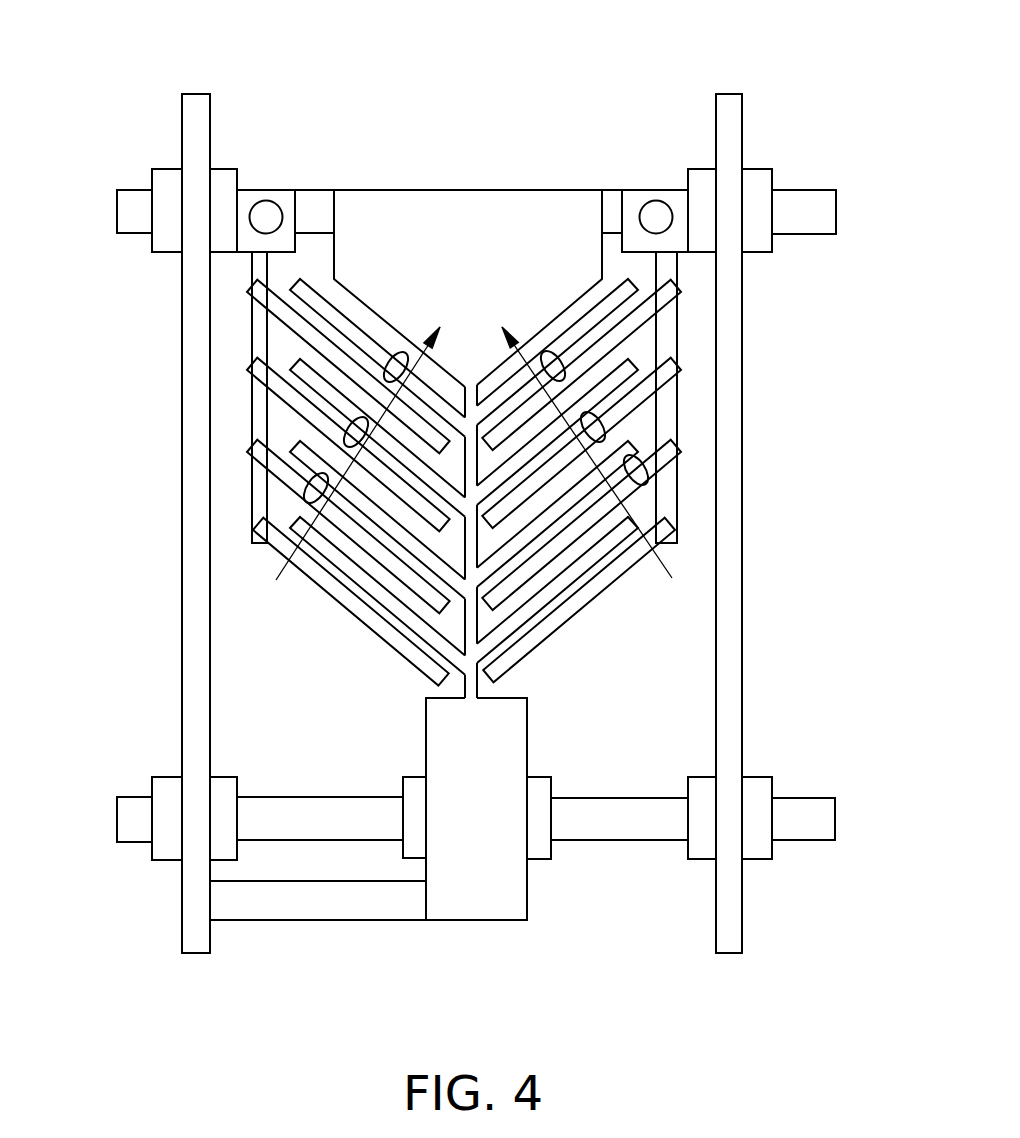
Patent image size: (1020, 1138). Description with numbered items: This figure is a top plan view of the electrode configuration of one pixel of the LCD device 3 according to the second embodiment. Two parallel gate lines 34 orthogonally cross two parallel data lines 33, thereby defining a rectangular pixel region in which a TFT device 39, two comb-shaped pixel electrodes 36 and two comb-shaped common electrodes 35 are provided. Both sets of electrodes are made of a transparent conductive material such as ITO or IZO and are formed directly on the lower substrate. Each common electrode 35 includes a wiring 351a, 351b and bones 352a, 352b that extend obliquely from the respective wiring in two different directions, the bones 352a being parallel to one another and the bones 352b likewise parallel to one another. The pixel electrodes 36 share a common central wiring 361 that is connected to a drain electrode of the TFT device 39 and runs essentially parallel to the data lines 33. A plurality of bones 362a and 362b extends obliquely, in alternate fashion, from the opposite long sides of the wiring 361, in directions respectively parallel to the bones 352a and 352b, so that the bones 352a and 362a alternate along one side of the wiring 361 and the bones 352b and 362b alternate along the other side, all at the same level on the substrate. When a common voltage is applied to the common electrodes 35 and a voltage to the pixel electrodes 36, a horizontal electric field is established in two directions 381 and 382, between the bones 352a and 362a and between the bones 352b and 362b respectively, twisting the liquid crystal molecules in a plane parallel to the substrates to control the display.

The LCD device 3 is at (422, 35).
The data lines 33 is at (197, 135).
The gate lines 34 is at (798, 208).
The common electrodes 35 is at (471, 483).
The wiring 351a is at (263, 327).
The bones 352a is at (260, 382).
The wiring 351b is at (667, 328).
The bones 352b is at (667, 372).
The pixel electrodes 36 is at (492, 445).
The central wiring 361 is at (468, 615).
The bones 362a is at (482, 676).
The bones 362b is at (523, 612).
The direction 381 is at (428, 346).
The direction 382 is at (508, 340).
The TFT device 39 is at (472, 882).